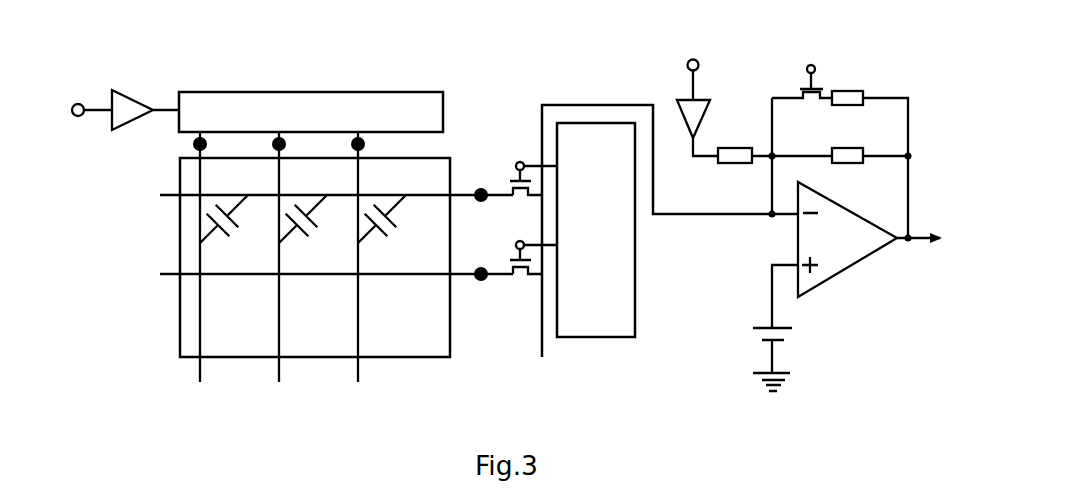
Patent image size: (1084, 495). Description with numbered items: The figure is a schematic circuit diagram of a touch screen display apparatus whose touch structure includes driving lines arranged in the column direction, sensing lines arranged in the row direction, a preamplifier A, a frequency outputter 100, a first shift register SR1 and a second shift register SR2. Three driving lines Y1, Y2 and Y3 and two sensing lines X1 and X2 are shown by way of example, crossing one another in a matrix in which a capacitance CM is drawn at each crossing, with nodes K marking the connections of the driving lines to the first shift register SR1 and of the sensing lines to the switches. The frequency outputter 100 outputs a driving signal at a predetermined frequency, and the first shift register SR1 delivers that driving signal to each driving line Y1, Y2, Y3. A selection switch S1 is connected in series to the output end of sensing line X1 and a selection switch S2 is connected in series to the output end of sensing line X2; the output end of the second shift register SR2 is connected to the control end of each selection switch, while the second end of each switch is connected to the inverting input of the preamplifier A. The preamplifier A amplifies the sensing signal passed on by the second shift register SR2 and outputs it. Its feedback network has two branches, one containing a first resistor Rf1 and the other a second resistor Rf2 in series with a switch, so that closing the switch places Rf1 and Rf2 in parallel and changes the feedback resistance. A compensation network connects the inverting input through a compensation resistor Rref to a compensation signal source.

The frequency outputter 100 is at (125, 99).
The first shift register SR1 is at (311, 99).
The second shift register SR2 is at (657, 238).
The connection node K is at (365, 143).
The selection switch S1 is at (532, 167).
The selection switch S2 is at (669, 158).
The sensing line X1 is at (315, 196).
The sensing line X2 is at (315, 274).
The driving line Y1 is at (208, 279).
The driving line Y2 is at (285, 279).
The driving line Y3 is at (371, 279).
The mutual capacitance CM is at (311, 226).
The compensation resistor Rref is at (724, 112).
The first resistor Rf1 is at (840, 147).
The second resistor Rf2 is at (840, 152).
The preamplifier A is at (847, 272).